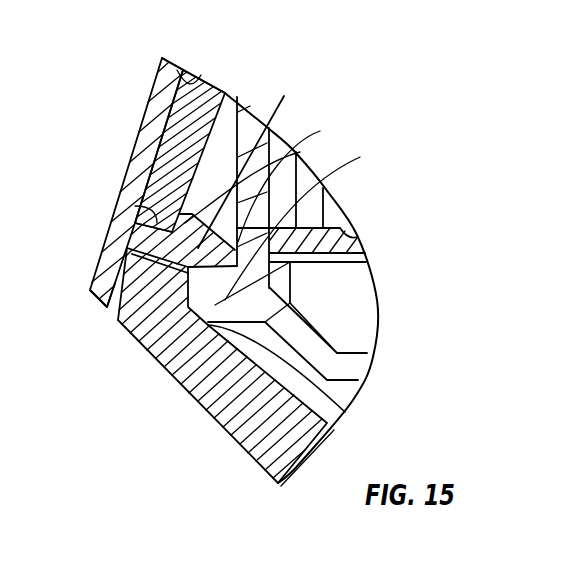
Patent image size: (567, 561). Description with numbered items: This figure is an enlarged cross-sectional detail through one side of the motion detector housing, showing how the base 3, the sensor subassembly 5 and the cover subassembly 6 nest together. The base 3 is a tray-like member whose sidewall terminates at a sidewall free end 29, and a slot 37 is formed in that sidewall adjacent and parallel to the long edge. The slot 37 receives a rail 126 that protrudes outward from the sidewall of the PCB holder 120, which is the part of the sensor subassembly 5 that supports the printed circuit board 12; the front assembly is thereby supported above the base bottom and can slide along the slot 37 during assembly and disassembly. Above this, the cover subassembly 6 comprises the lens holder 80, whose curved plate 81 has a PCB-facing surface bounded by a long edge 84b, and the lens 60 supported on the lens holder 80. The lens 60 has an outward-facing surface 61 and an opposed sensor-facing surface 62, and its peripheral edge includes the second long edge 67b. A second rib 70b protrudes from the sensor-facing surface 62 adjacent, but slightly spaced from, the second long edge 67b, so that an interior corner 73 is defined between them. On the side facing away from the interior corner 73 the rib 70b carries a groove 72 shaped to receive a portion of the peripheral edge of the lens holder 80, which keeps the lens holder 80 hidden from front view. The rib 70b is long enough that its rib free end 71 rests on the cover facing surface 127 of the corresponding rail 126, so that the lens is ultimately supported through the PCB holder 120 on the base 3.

The base 3 is at (227, 413).
The sensor subassembly 5 is at (470, 198).
The cover subassembly 6 is at (60, 160).
The printed circuit board 12 is at (350, 228).
The sidewall free end 29 is at (153, 298).
The slot 37 is at (350, 404).
The lens 60 is at (140, 166).
The outward-facing surface 61 is at (152, 74).
The sensor-facing surface 62 is at (188, 80).
The second long edge 67b is at (106, 303).
The second rib 70b is at (250, 162).
The rib free end 71 is at (302, 220).
The groove 72 is at (138, 210).
The interior corner 73 is at (128, 256).
The lens holder 80 is at (180, 107).
The curved plate 81 is at (237, 97).
The long edge 84b is at (133, 212).
The PCB holder 120 is at (358, 370).
The rail 126 is at (328, 205).
The cover facing surface 127 is at (295, 179).